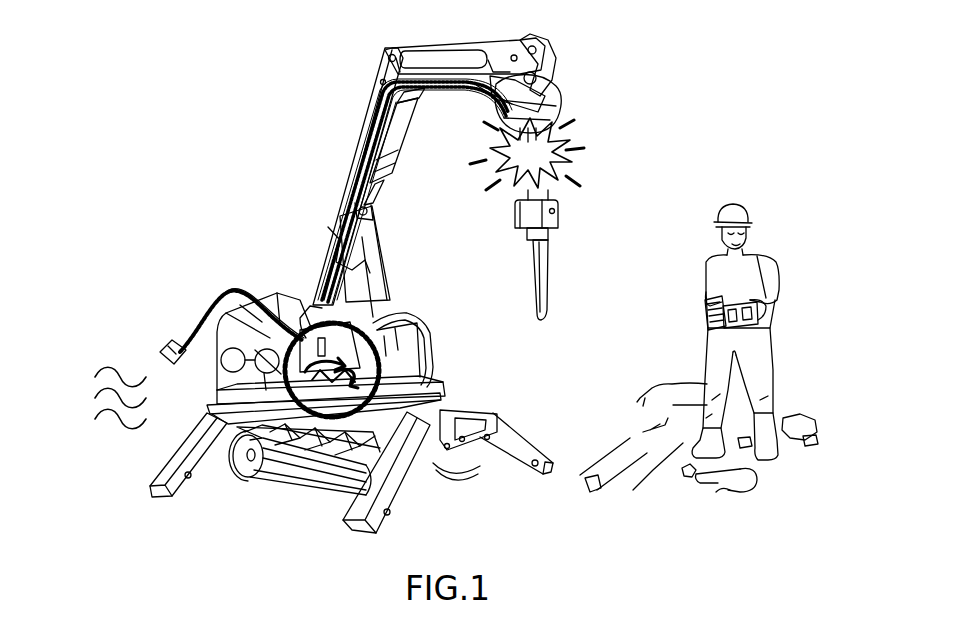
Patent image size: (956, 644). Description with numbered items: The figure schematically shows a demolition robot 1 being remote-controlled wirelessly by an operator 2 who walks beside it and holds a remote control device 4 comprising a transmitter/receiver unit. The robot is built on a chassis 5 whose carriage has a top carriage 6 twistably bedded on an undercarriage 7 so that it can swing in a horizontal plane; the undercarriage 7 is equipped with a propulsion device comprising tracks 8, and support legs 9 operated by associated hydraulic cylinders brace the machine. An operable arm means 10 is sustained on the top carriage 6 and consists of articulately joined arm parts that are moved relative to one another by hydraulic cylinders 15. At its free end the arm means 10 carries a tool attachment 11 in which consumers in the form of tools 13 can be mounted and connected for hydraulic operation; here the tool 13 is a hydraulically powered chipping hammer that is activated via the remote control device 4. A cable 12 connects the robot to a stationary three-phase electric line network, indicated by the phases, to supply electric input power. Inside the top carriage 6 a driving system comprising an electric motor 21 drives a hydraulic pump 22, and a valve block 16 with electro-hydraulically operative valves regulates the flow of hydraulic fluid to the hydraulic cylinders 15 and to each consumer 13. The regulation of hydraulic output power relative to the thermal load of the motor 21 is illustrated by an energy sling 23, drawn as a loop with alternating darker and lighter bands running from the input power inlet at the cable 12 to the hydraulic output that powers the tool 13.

The demolition robot 1 is at (231, 192).
The operator 2 is at (767, 249).
The remote control device 4 is at (705, 300).
The chassis 5 is at (478, 385).
The top carriage 6 is at (428, 366).
The undercarriage 7 is at (462, 448).
The tracks 8 is at (316, 448).
The support legs 9 is at (406, 496).
The arm means 10 is at (379, 90).
The tool attachment 11 is at (558, 86).
The cable 12 is at (172, 333).
The tool 13 is at (556, 228).
The hydraulic cylinders 15 is at (393, 148).
The valve block 16 is at (306, 303).
The motor 21 is at (232, 346).
The hydraulic pump 22 is at (267, 348).
The energy sling 23 is at (388, 318).